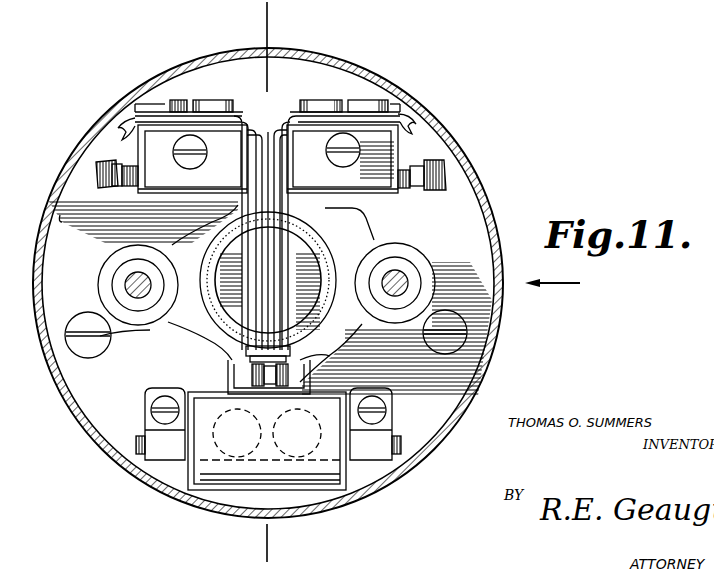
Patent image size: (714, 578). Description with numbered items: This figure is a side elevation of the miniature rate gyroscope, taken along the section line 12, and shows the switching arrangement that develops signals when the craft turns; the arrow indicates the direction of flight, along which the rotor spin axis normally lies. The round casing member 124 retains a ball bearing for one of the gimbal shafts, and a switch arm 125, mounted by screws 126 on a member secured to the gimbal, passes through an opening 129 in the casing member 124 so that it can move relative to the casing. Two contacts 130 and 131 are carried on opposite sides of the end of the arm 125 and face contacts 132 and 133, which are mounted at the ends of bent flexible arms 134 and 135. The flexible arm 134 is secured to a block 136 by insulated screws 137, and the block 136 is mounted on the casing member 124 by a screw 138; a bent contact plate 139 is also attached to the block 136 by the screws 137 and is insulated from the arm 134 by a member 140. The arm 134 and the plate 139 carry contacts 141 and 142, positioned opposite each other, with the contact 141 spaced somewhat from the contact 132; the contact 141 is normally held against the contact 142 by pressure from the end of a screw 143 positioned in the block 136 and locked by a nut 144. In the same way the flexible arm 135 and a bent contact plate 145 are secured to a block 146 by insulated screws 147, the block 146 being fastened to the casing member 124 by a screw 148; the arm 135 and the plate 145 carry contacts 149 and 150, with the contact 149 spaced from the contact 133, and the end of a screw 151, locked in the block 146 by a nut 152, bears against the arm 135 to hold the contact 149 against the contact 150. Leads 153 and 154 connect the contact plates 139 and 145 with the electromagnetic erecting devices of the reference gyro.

The section line 12- 12 is at (262, 17).
The casing member 124 is at (462, 212).
The switch arm 125 is at (292, 460).
The screws 126 is at (234, 452).
The opening 129 is at (297, 380).
The contact 130 is at (270, 376).
The contact 131 is at (270, 434).
The contact 132 is at (292, 370).
The contact 133 is at (252, 373).
The flexible arm 134 is at (306, 126).
The flexible arm 135 is at (212, 124).
The block 136 is at (355, 180).
The insulated screws 137 is at (335, 100).
The screw 138 is at (342, 160).
The bent contact plate 139 is at (262, 240).
The insulating member 140 is at (394, 112).
The contact 141 is at (312, 323).
The contact 142 is at (308, 337).
The screw 143 is at (434, 166).
The nut 144 is at (396, 190).
The bent contact plate 145 is at (290, 232).
The block 146 is at (190, 196).
The insulated screws 147 is at (202, 105).
The screw 148 is at (192, 160).
The contact 149 is at (230, 368).
The contact 150 is at (138, 285).
The screw 151 is at (105, 173).
The nut 152 is at (128, 158).
The lead 153 is at (410, 136).
The lead 154 is at (118, 132).